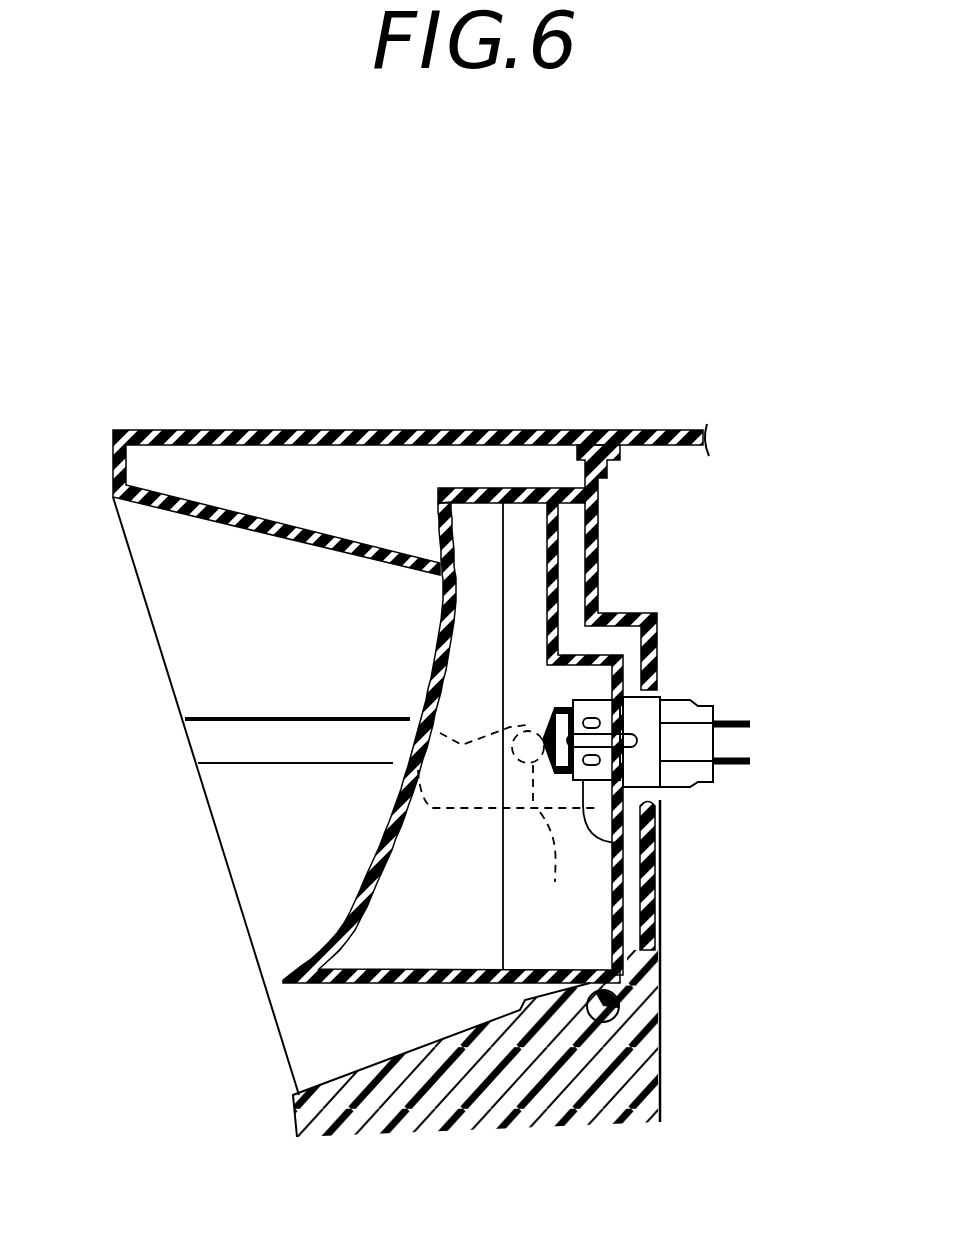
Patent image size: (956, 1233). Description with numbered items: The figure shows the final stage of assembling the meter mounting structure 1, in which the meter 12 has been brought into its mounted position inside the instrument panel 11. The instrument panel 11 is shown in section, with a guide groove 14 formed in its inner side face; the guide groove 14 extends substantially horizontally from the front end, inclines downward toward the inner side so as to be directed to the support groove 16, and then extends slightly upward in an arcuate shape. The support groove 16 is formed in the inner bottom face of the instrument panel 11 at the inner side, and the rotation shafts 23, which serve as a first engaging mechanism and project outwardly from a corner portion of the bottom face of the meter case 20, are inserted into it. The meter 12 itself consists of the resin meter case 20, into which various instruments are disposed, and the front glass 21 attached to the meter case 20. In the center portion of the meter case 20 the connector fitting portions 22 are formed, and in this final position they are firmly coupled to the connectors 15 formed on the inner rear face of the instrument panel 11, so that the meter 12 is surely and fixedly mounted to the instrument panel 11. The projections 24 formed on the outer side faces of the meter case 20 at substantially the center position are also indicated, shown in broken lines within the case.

The meter mounting structure 1 is at (533, 380).
The instrument panel 11 is at (372, 426).
The meter 12 is at (330, 862).
The guide grooves 14 is at (256, 719).
The connectors 15 is at (620, 843).
The support groove 16 is at (620, 1027).
The meter case 20 is at (560, 592).
The front glass 21 is at (435, 626).
The connector fitting portions 22 is at (625, 686).
The rotation shafts 23 is at (620, 1010).
The projections 24 is at (509, 830).